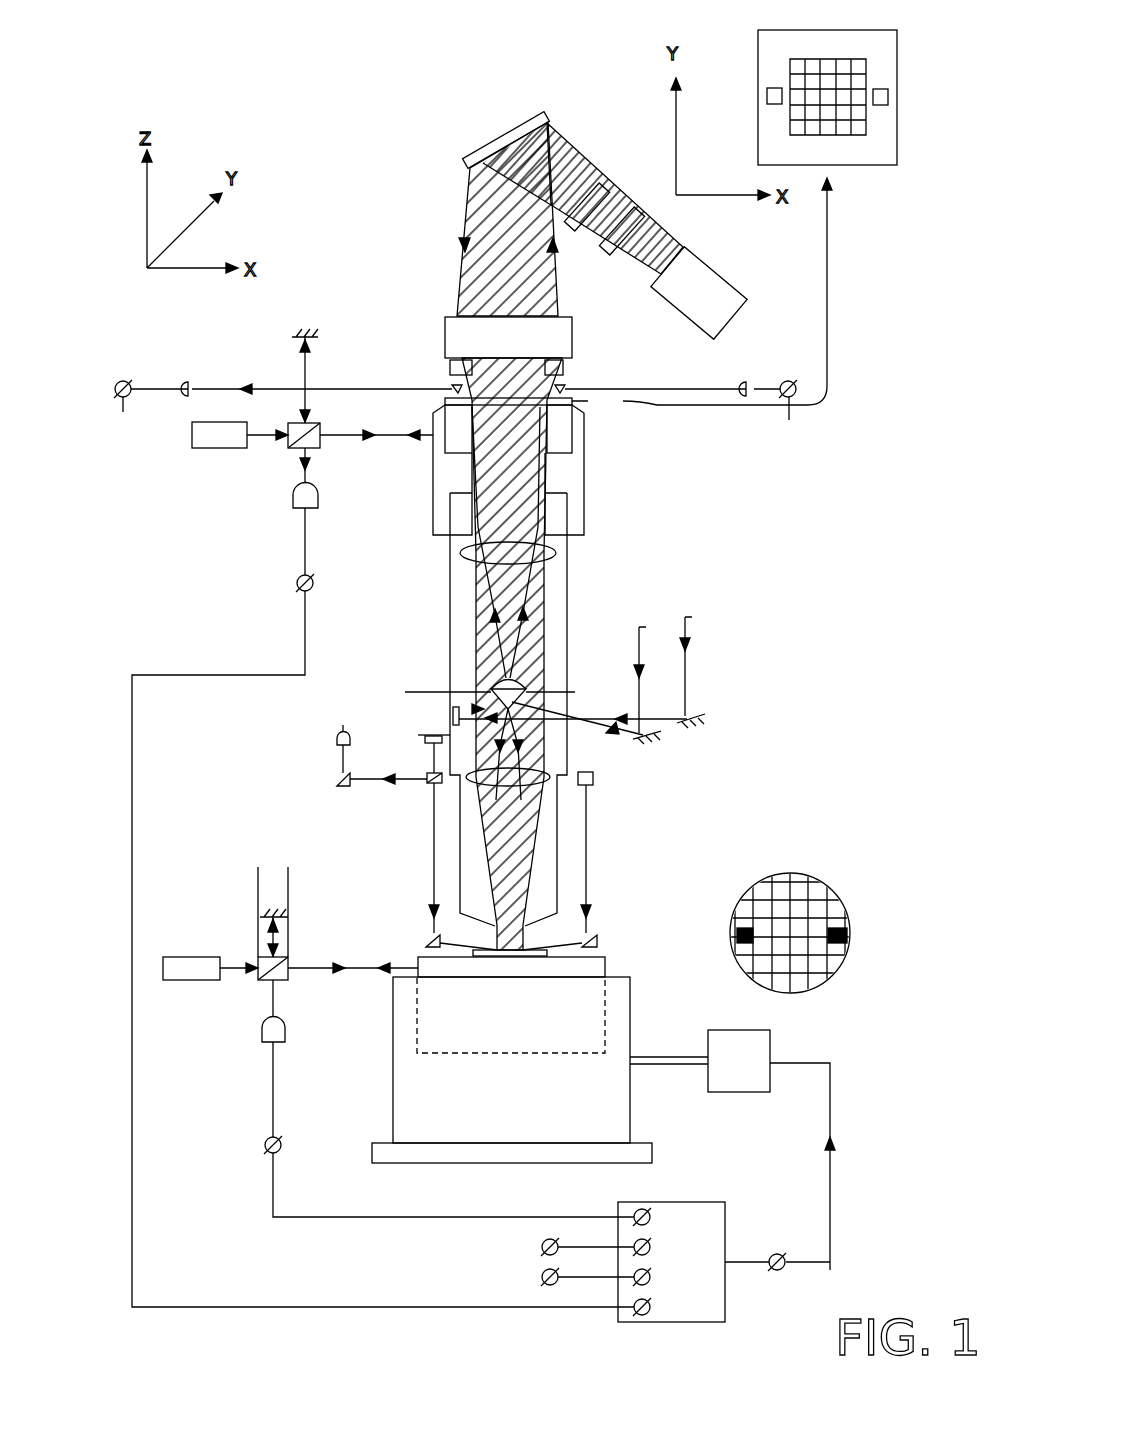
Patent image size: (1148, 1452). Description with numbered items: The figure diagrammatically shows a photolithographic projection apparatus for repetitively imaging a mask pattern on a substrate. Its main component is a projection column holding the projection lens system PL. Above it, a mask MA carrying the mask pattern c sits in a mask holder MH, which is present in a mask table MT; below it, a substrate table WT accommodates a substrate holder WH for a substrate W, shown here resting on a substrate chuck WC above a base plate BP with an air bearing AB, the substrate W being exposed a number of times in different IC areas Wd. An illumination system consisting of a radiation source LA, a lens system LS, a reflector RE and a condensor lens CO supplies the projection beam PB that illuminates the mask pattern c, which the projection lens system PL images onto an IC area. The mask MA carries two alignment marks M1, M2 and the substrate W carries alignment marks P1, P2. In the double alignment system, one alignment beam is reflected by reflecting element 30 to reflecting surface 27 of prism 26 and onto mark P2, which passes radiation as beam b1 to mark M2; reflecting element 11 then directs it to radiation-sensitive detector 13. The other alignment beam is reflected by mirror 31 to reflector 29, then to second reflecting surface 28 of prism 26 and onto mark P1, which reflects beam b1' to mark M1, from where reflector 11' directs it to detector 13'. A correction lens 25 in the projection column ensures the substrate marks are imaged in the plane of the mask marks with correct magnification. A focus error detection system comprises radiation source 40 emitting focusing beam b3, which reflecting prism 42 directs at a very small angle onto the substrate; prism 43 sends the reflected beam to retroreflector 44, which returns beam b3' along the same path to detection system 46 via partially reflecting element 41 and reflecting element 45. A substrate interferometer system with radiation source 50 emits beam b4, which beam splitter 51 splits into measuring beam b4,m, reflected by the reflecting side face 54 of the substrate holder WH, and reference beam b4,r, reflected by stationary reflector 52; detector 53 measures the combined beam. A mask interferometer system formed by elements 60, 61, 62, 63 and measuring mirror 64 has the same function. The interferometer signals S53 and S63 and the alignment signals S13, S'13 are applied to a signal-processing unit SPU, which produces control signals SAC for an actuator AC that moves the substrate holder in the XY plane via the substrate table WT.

The reflector RE is at (487, 145).
The projection beam PB is at (480, 222).
The lens system LS is at (650, 181).
The radiation source LA is at (705, 278).
The condensor lens CO is at (572, 338).
The reflecting element 11 is at (431, 376).
The reflector 11' is at (585, 376).
The radiation-sensitive detector 13 is at (291, 368).
The radiation-sensitive detector 13' is at (672, 370).
The alignment system signal S13 is at (124, 415).
The alignment system signal S'13 is at (791, 415).
The mask MA is at (659, 295).
The mask holder MH is at (568, 437).
The mask table MT is at (584, 480).
The mask alignment mark M1 is at (888, 97).
The mask alignment mark M2 is at (767, 96).
The mask pattern c is at (845, 135).
The stationary reflector of mask interferometer system 62 is at (320, 339).
The radiation source of mask interferometer system 60 is at (205, 448).
The beam splitter of mask interferometer system 61 is at (320, 441).
The detector of mask interferometer system 63 is at (318, 497).
The measuring mirror of mask interferometer system 64 is at (445, 448).
The mask interferometer system signal S63 is at (296, 583).
The projection lens system PL is at (567, 663).
The alignment beam b1 is at (452, 542).
The alignment beam b1' is at (562, 542).
The correction lens 25 is at (500, 683).
The prism 26 is at (492, 692).
The reflecting surface 27 is at (563, 692).
The second reflecting surface 28 is at (434, 692).
The reflector 29 is at (453, 714).
The reflecting element 30 is at (660, 740).
The mirror 31 is at (703, 718).
The radiation source 40 is at (425, 739).
The partially reflecting element 41 is at (428, 785).
The reflecting prism 42 is at (426, 942).
The prism 43 is at (597, 942).
The retroreflector 44 is at (593, 779).
The reflecting element 45 is at (337, 780).
The radiation-sensitive detection system 46 is at (337, 744).
The focusing beam b3 is at (411, 886).
The reflected focusing beam b3' is at (436, 835).
The radiation source 50 is at (180, 980).
The beam splitter 51 is at (290, 975).
The stationary reflector 52 is at (260, 915).
The detector 53 is at (262, 1032).
The reflecting side face 54 is at (413, 963).
The interferometer signal S53 is at (264, 1145).
The interferometer beam b4 is at (236, 980).
The reference beam b4,r is at (285, 935).
The measuring beam b4,m is at (362, 972).
The substrate W is at (710, 916).
The substrate chuck WC is at (605, 967).
The substrate holder WH is at (478, 1043).
The substrate table WT is at (372, 1092).
The base plate BP is at (399, 1163).
The air bearing AB is at (579, 1130).
The actuator AC is at (750, 1092).
The signal-processing unit SPU is at (702, 1205).
The control signal SAC is at (777, 1252).
The IC area Wd is at (816, 888).
The substrate alignment mark P1 is at (736, 940).
The substrate alignment mark P2 is at (848, 940).